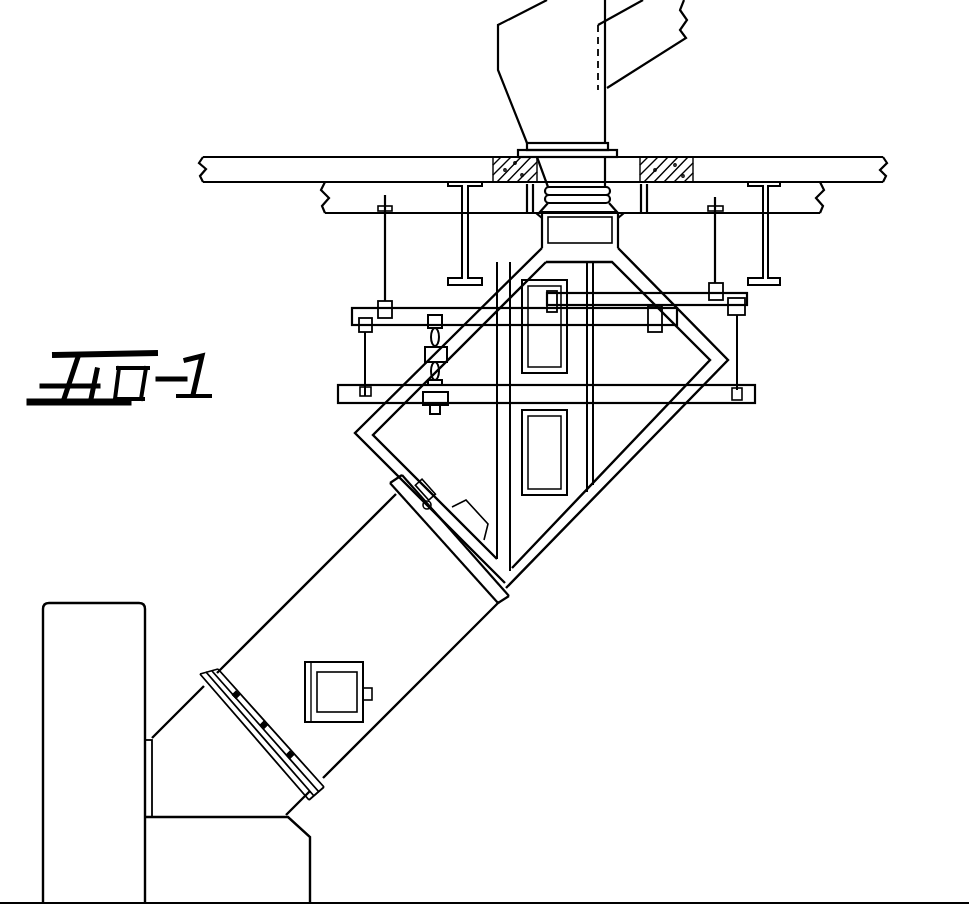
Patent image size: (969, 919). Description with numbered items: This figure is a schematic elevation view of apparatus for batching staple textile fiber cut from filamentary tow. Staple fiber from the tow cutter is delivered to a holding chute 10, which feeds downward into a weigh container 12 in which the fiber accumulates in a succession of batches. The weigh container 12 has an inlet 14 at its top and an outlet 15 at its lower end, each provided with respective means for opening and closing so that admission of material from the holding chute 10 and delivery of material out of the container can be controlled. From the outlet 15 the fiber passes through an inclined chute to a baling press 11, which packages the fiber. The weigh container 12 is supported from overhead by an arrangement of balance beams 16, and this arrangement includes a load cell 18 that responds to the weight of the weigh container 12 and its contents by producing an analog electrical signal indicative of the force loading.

The holding chute 10 is at (484, 55).
The baling press 11 is at (111, 596).
The weigh container 12 is at (622, 491).
The inlet 14 is at (618, 233).
The outlet 15 is at (405, 490).
The balance beams 16 is at (465, 308).
The load cell 18 is at (425, 353).